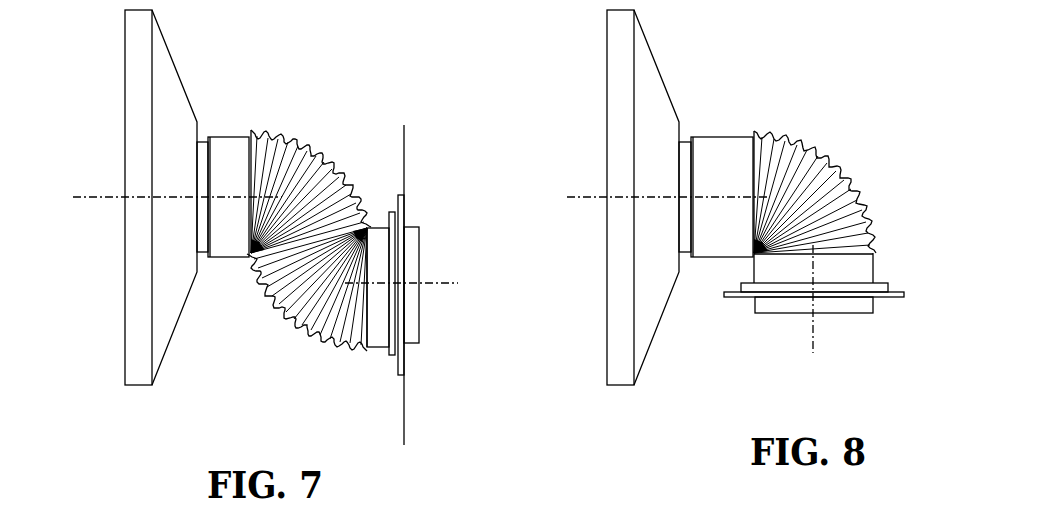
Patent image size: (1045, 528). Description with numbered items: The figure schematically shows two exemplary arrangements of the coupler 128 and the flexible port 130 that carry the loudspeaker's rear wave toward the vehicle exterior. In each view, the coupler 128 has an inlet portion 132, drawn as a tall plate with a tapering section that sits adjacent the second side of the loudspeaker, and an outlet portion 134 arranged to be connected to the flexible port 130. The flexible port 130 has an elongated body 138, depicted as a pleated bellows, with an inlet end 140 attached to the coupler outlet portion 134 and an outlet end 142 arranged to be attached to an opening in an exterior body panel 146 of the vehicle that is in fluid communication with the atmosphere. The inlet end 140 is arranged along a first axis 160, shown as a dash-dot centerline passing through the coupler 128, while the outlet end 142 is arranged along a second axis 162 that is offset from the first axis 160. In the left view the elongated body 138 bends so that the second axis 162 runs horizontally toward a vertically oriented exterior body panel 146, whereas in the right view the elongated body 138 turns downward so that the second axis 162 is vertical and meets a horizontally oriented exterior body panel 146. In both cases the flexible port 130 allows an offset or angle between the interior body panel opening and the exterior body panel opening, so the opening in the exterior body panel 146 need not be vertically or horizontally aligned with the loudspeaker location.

In FIG. 7, the coupler 128 is at (142, 398).
In FIG. 8, the coupler 128 is at (612, 398).
In FIG. 7, the flexible port 130 is at (358, 138).
In FIG. 8, the flexible port 130 is at (858, 138).
In FIG. 7, the inlet portion 132 is at (125, 72).
In FIG. 8, the inlet portion 132 is at (607, 128).
In FIG. 7, the outlet portion 134 is at (200, 133).
In FIG. 8, the outlet portion 134 is at (683, 197).
In FIG. 7, the elongated body 138 is at (292, 330).
In FIG. 8, the elongated body 138 is at (858, 190).
In FIG. 7, the inlet end 140 is at (200, 258).
In FIG. 8, the inlet end 140 is at (686, 142).
In FIG. 7, the outlet end 142 is at (388, 348).
In FIG. 8, the outlet end 142 is at (878, 282).
In FIG. 7, the exterior body panel 146 is at (405, 165).
In FIG. 8, the exterior body panel 146 is at (890, 300).
In FIG. 7, the first axis 160 is at (137, 197).
In FIG. 8, the first axis 160 is at (652, 197).
In FIG. 7, the second axis 162 is at (450, 282).
In FIG. 8, the second axis 162 is at (813, 343).